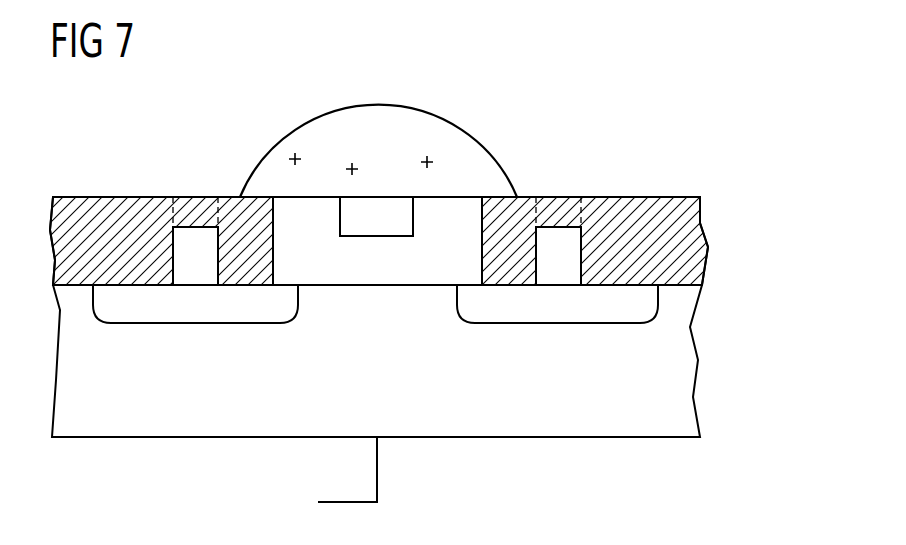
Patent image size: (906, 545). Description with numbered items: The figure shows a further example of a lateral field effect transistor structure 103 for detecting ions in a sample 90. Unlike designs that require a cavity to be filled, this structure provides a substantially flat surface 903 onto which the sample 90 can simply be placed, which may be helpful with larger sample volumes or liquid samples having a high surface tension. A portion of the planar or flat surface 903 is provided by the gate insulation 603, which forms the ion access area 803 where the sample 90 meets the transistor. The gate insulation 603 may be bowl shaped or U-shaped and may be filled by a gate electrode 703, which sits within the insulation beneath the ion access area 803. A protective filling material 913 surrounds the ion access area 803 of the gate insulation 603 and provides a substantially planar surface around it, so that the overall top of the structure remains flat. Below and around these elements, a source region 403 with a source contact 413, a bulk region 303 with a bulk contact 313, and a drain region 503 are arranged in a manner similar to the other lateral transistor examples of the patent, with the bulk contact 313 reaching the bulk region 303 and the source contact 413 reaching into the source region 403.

The sample 90 is at (377, 110).
The lateral field effect transistor structure 103 is at (687, 93).
The bulk region 303 is at (685, 378).
The bulk contact 313 is at (558, 233).
The source region 403 is at (195, 313).
The source contact 413 is at (195, 233).
The drain region 503 is at (558, 313).
The gate insulation 603 is at (375, 282).
The gate electrode 703 is at (348, 225).
The ion access area 803 is at (456, 186).
The flat surface 903 is at (525, 193).
The protective filling material 913 is at (112, 203).